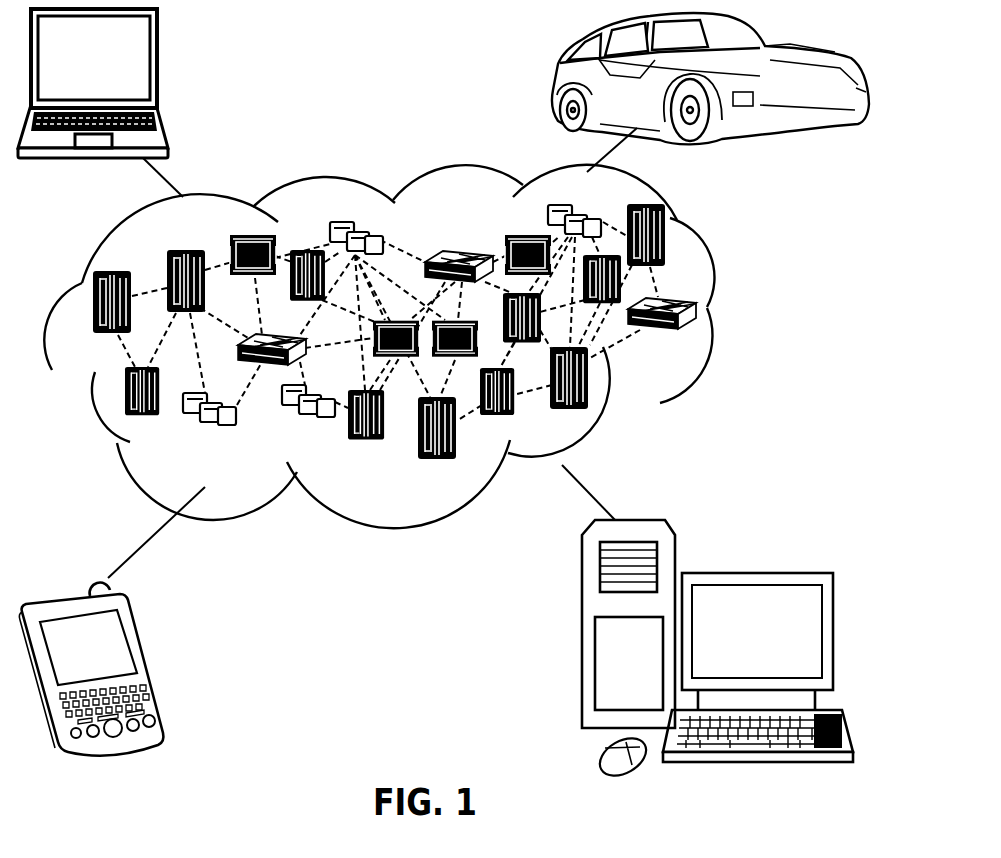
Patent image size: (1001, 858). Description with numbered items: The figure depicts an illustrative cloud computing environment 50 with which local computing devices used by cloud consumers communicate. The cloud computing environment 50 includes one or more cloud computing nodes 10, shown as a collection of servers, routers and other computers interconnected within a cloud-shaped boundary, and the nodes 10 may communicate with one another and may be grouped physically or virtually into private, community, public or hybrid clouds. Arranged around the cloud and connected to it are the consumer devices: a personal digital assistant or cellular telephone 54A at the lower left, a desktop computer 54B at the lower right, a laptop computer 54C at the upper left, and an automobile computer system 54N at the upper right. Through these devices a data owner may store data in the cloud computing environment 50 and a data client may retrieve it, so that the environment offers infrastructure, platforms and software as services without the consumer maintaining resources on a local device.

The laptop computer 54C is at (157, 66).
The automobile computer system 54N is at (556, 73).
The personal digital assistant (PDA) or cellular telephone 54A is at (150, 661).
The desktop computer 54B is at (753, 573).
The cloud computing environment 50 is at (757, 312).
The cloud computing nodes 10 is at (710, 342).